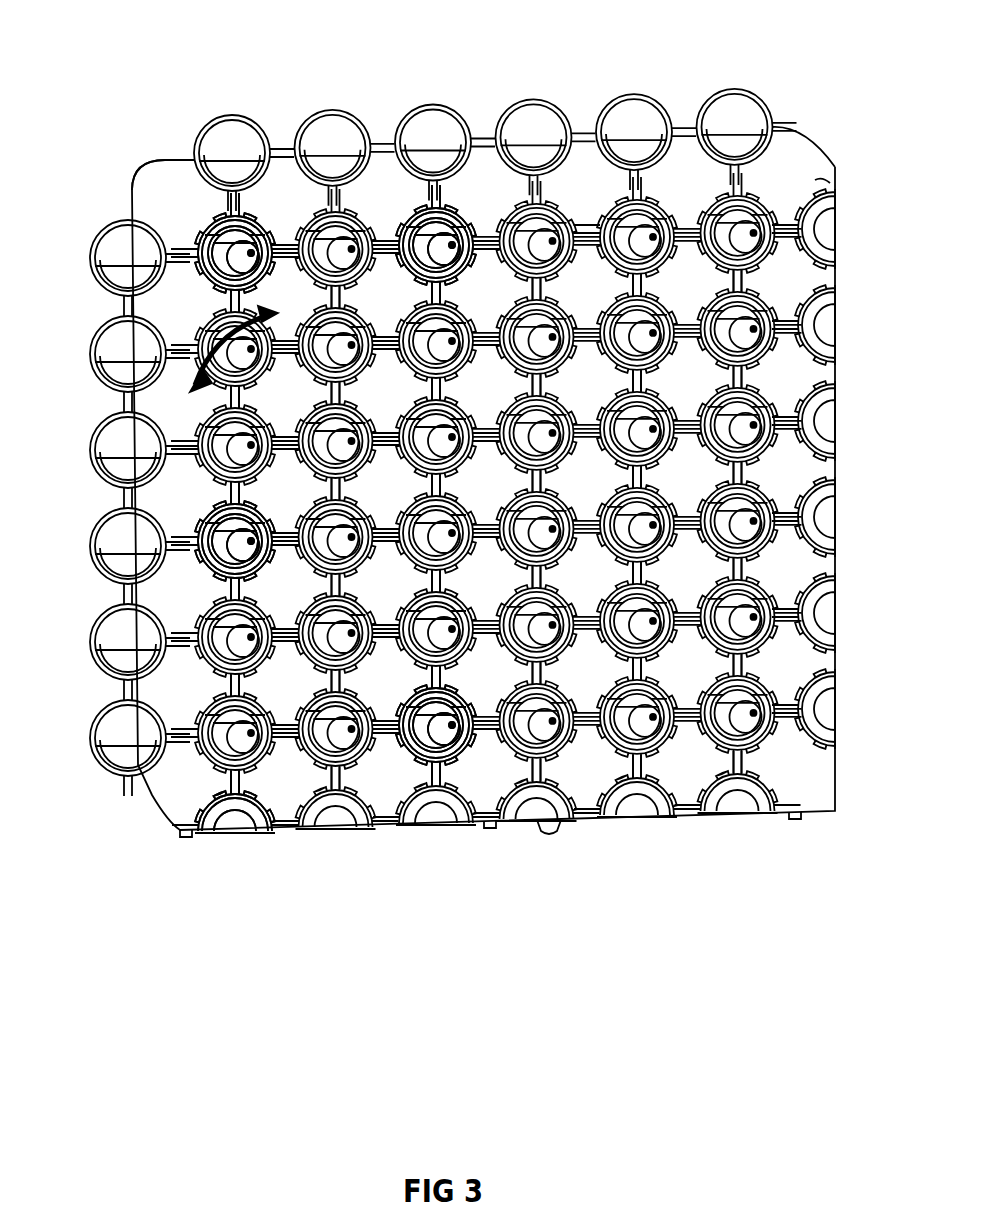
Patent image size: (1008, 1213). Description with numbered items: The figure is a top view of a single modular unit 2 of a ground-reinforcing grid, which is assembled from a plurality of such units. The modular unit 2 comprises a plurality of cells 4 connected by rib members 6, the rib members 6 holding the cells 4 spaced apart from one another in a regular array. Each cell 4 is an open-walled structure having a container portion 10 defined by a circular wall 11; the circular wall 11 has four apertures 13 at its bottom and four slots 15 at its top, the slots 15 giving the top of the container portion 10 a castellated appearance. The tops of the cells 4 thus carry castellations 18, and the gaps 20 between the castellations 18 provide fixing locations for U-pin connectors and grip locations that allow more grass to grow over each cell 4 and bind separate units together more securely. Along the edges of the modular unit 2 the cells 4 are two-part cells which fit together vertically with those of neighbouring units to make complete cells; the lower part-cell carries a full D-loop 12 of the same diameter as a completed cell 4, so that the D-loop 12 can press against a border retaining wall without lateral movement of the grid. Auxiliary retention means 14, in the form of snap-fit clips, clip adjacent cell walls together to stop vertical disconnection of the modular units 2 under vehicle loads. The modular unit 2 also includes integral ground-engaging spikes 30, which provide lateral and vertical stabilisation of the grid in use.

The modular unit 2 is at (627, 868).
The cell 4 is at (343, 830).
The rib member 6 is at (580, 228).
The container portion 10 is at (650, 330).
The circular wall 11 is at (207, 503).
The D-loop 12 is at (100, 776).
The aperture 13 is at (452, 760).
The auxiliary retention means 14 is at (795, 819).
The slot 15 is at (402, 218).
The castellation 18 is at (240, 232).
The gap 20 is at (212, 797).
The ground-engaging spike 30 is at (550, 834).